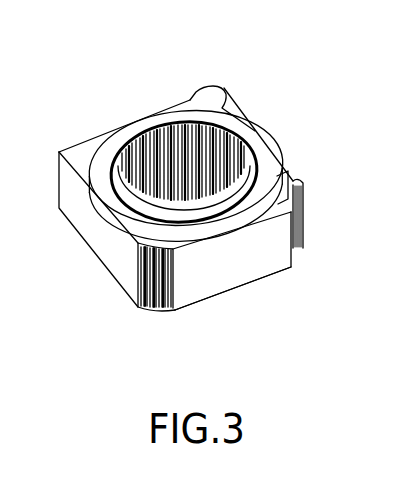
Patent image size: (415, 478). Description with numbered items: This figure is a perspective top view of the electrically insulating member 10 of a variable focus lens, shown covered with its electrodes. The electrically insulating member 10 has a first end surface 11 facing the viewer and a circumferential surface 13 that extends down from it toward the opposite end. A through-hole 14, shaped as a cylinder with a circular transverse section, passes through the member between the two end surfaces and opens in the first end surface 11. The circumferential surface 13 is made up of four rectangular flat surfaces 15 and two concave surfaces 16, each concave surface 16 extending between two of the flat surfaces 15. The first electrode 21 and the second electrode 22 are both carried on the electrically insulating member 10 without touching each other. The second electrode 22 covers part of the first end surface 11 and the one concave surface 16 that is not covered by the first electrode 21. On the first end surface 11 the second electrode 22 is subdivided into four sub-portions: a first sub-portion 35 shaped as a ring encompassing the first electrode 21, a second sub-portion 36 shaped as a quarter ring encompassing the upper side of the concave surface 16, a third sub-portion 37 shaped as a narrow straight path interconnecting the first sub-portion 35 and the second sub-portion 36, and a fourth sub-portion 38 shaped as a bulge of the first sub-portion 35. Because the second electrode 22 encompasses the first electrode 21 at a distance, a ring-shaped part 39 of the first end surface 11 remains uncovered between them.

The electrically insulating member 10 is at (82, 157).
The first end surface 11 is at (85, 148).
The circumferential surface 13 is at (103, 237).
The through-hole 14 is at (187, 202).
The flat surface 15 is at (258, 250).
The concave surface 16 is at (303, 215).
The first electrode 21 is at (182, 124).
The second electrode 22 is at (258, 133).
The first sub-portion 35 is at (100, 187).
The second sub-portion 36 is at (290, 190).
The third sub-portion 37 is at (283, 188).
The fourth sub-portion 38 is at (213, 100).
The uncovered part of first end surface 39 is at (149, 130).